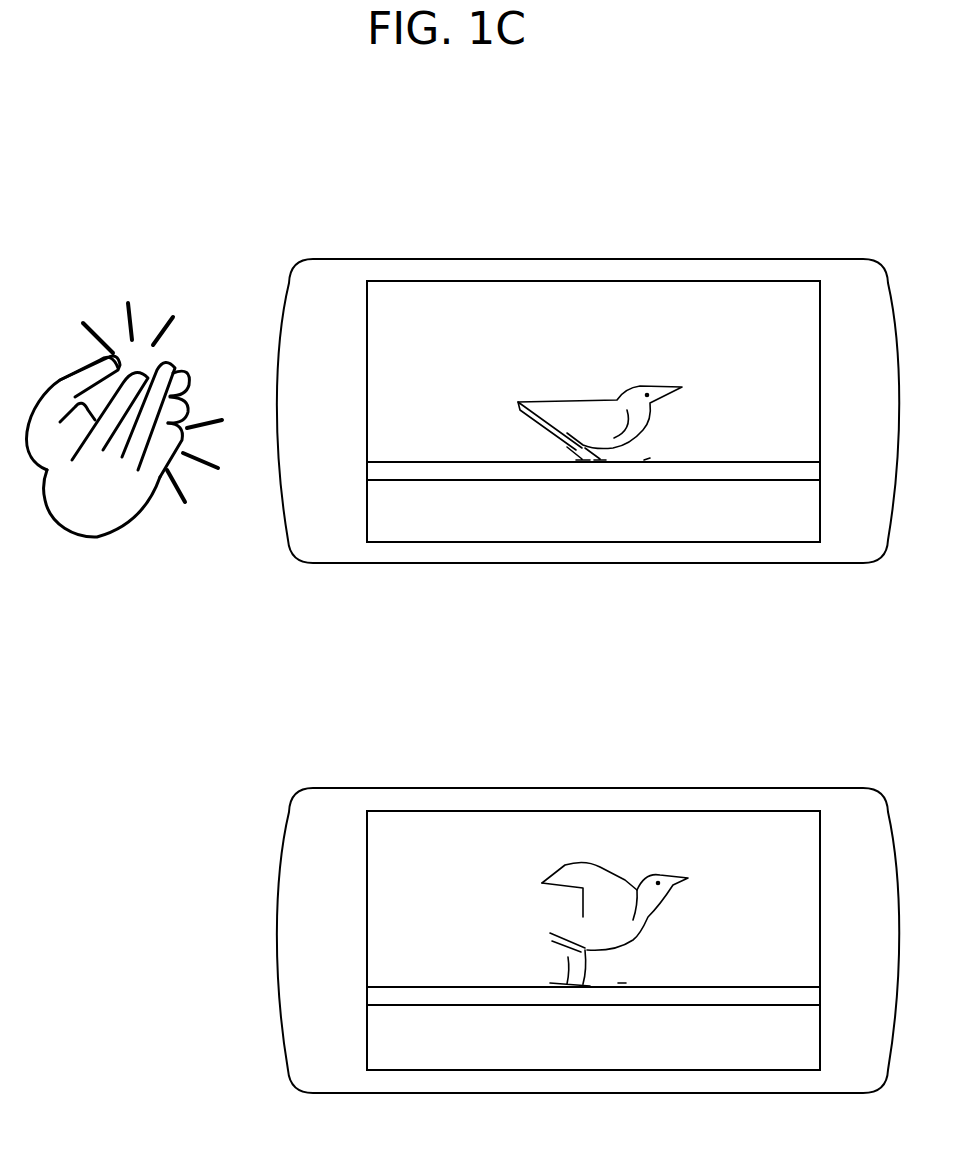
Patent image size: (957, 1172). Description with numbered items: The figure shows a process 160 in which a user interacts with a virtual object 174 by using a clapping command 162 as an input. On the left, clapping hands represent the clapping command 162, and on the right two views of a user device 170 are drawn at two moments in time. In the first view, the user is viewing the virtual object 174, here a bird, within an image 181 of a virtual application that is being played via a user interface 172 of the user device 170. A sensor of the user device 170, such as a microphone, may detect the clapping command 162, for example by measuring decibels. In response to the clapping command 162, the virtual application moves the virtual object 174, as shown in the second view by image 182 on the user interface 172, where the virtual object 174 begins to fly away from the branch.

The process 160 is at (70, 60).
The clapping command 162 is at (182, 363).
The user device 170 is at (782, 258).
The user interface 172 is at (818, 363).
The virtual object 174 is at (583, 408).
The image 181 is at (417, 315).
The image 182 is at (415, 843).